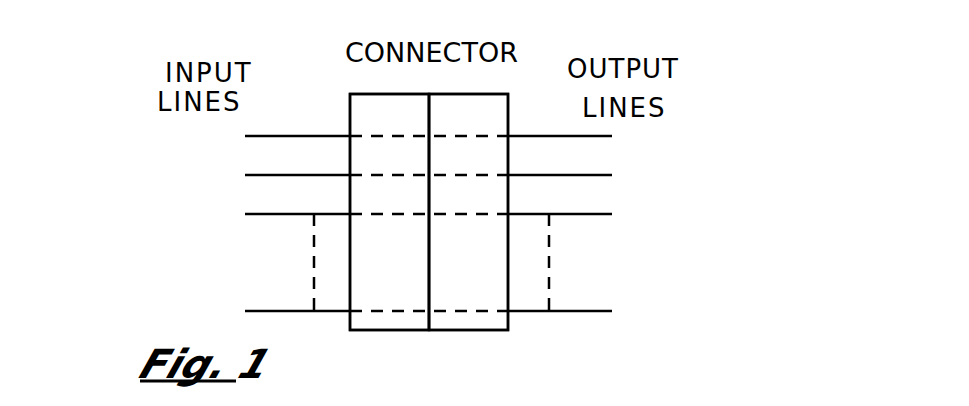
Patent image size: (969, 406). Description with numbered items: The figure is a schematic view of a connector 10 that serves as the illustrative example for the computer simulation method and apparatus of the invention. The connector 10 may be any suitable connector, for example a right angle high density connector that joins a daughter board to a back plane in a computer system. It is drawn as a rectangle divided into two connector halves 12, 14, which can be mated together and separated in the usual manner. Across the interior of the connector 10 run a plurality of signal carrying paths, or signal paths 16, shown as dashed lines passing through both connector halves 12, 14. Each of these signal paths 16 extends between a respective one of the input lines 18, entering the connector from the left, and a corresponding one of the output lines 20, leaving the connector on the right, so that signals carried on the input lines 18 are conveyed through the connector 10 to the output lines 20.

The connector 10 is at (340, 90).
The connector half 12 is at (404, 127).
The connector half 14 is at (480, 127).
The signal paths 16 is at (376, 214).
The input lines 18 is at (283, 214).
The output lines 20 is at (588, 214).